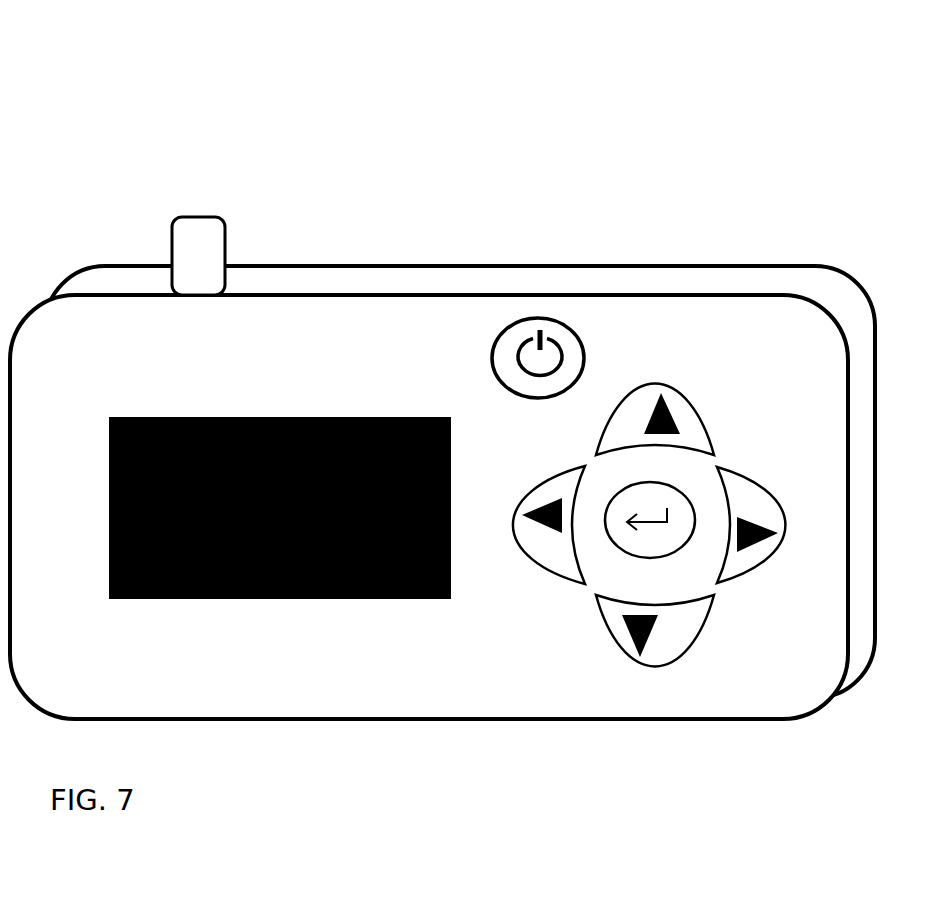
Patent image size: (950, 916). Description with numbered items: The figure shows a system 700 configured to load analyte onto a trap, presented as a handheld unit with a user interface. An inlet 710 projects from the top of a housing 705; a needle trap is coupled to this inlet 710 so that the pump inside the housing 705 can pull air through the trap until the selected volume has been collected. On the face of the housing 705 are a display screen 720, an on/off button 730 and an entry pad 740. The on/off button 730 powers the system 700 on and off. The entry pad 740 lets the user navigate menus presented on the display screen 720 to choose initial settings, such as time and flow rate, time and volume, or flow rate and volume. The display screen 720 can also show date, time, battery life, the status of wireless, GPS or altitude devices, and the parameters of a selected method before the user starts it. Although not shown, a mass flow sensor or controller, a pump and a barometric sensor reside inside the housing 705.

The system 700 is at (501, 106).
The housing 705 is at (505, 285).
The inlet 710 is at (198, 218).
The display screen 720 is at (276, 598).
The on/off button 730 is at (555, 320).
The entry pad 740 is at (777, 673).